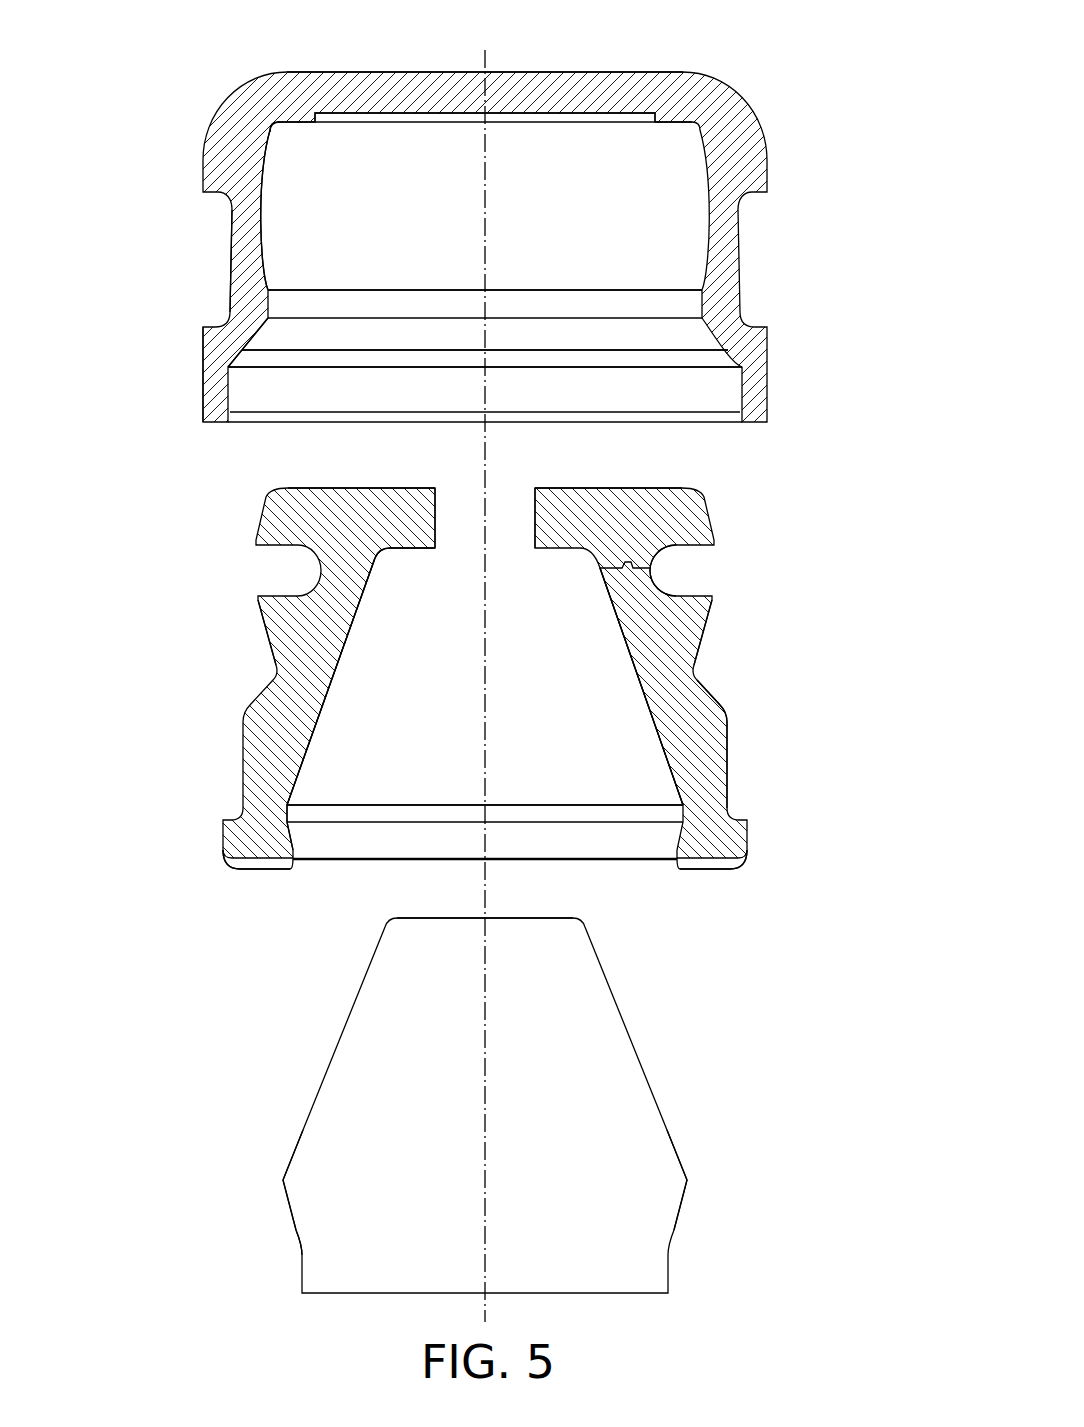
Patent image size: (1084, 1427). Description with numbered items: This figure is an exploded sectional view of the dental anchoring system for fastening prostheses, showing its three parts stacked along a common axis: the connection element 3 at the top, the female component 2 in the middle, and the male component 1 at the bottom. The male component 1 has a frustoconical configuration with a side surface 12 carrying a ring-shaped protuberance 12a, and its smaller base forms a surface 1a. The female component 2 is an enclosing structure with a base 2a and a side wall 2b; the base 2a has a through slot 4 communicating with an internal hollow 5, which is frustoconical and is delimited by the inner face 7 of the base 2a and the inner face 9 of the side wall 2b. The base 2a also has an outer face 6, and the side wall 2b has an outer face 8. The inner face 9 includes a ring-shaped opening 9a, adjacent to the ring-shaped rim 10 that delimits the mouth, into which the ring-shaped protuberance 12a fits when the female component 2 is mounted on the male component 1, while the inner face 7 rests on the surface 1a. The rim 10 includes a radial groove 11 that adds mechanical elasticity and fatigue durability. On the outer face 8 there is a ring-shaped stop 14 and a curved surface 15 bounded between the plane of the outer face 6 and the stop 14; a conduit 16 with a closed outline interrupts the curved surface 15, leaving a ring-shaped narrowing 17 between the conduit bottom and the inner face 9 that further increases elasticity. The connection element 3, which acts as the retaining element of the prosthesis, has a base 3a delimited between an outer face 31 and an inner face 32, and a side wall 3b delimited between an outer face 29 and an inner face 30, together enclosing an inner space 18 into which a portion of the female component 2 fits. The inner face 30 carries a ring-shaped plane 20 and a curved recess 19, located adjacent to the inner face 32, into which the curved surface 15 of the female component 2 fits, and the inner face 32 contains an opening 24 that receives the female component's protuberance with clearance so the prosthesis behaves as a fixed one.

The male component 1 is at (738, 1238).
The surface of the male component 1a is at (528, 917).
The side surface of the male component 12 is at (302, 1130).
The ring-shaped protuberance 12a is at (690, 1190).
The female component 2 is at (790, 825).
The base of the female component 2a is at (587, 507).
The side wall of the female component 2b is at (297, 632).
The through slot 4 is at (463, 505).
The internal hollow 5 is at (520, 775).
The outer face of the base 6 is at (373, 487).
The inner face of the base 7 is at (410, 555).
The outer face of the side wall 8 is at (728, 748).
The inner face of the side wall 9 is at (293, 843).
The ring-shaped opening 9a is at (292, 812).
The ring-shaped rim 10 is at (253, 870).
The radial groove 11 is at (710, 862).
The ring-shaped stop 14 is at (713, 697).
The curved surface 15 is at (710, 628).
The conduit 16 is at (695, 570).
The ring-shaped narrowing 17 is at (627, 567).
The connection element 3 is at (795, 372).
The base of the connection element 3a is at (568, 90).
The side wall of the connection element 3b is at (243, 245).
The inner space 18 is at (467, 272).
The curved recess 19 is at (258, 187).
The ring-shaped plane 20 is at (253, 335).
The opening 24 is at (640, 117).
The outer face of the side wall of the connection element 29 is at (203, 356).
The inner face of the side wall of the connection element 30 is at (267, 262).
The outer face of the base of the connection element 31 is at (411, 70).
The inner face of the base of the connection element 32 is at (292, 126).